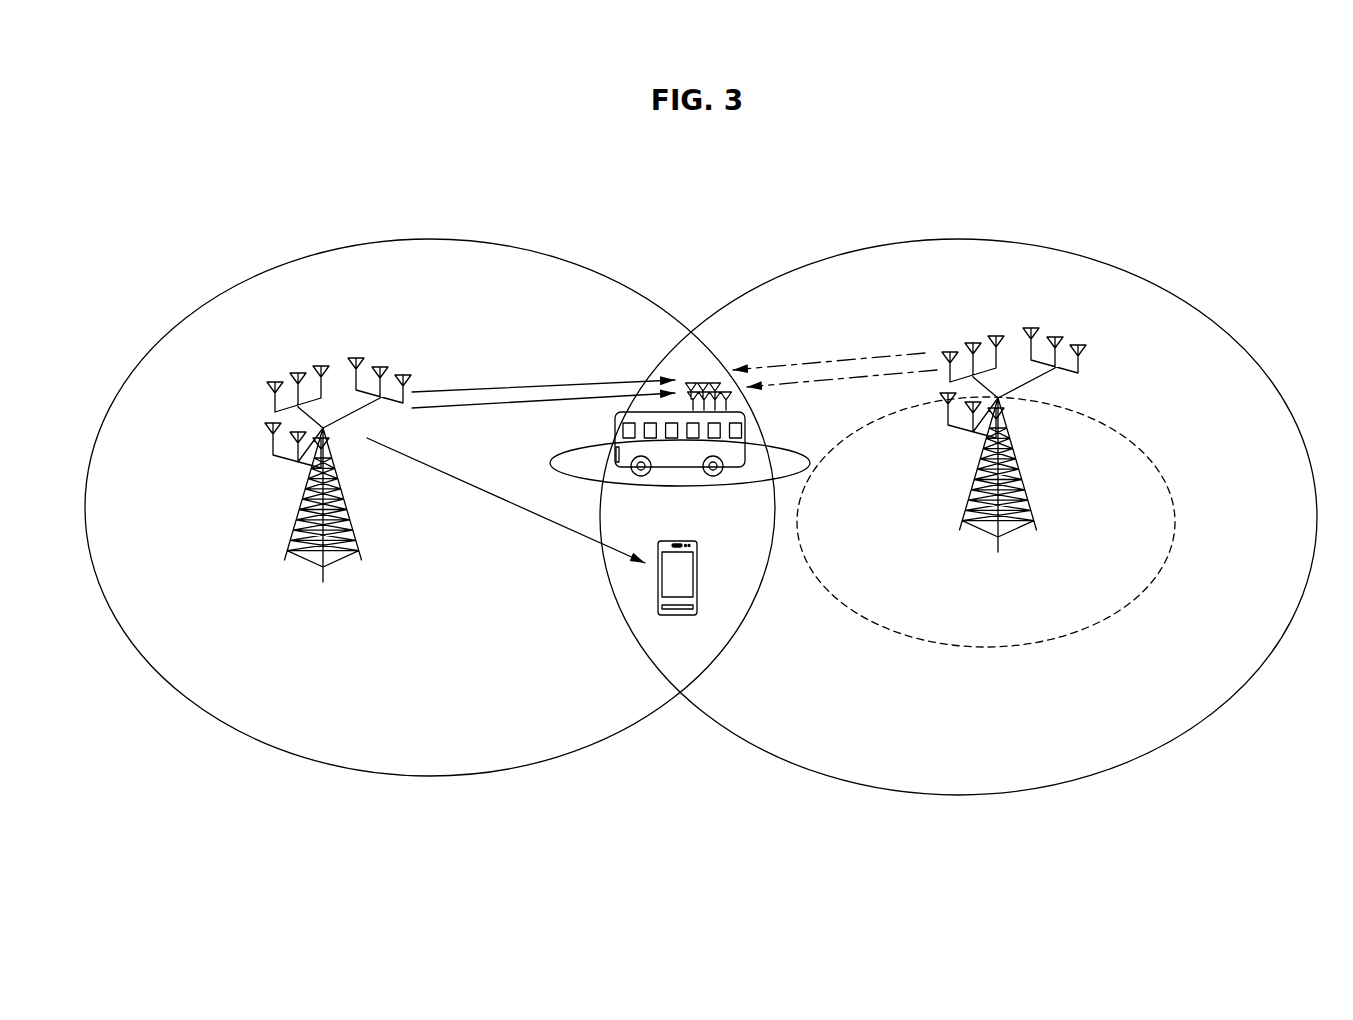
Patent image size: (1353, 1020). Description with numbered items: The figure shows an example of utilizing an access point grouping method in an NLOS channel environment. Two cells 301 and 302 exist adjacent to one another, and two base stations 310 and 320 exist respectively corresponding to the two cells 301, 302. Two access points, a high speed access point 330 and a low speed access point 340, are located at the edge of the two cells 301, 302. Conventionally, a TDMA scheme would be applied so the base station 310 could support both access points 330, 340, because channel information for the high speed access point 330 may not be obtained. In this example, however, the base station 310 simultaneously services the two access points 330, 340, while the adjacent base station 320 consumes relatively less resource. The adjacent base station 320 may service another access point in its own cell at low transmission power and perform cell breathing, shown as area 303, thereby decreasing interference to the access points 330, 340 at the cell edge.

The cell 301 is at (430, 238).
The cell 302 is at (958, 238).
The area 303 is at (987, 648).
The base station 310 is at (257, 380).
The adjacent base station 320 is at (1043, 338).
The high speed access point 330 is at (613, 416).
The low speed access point 340 is at (658, 577).